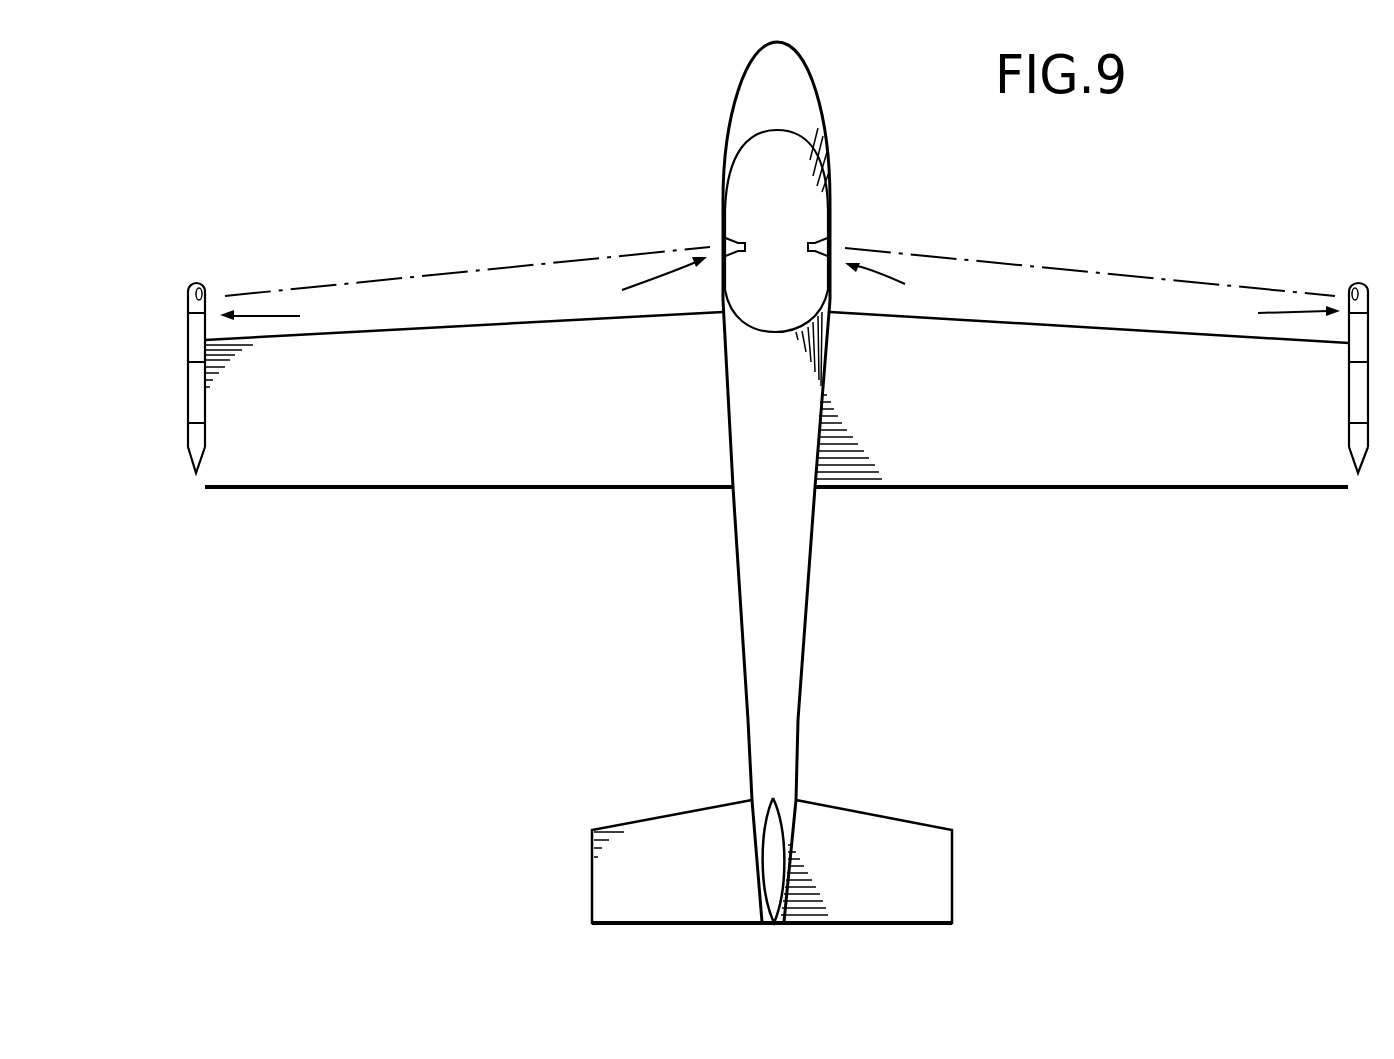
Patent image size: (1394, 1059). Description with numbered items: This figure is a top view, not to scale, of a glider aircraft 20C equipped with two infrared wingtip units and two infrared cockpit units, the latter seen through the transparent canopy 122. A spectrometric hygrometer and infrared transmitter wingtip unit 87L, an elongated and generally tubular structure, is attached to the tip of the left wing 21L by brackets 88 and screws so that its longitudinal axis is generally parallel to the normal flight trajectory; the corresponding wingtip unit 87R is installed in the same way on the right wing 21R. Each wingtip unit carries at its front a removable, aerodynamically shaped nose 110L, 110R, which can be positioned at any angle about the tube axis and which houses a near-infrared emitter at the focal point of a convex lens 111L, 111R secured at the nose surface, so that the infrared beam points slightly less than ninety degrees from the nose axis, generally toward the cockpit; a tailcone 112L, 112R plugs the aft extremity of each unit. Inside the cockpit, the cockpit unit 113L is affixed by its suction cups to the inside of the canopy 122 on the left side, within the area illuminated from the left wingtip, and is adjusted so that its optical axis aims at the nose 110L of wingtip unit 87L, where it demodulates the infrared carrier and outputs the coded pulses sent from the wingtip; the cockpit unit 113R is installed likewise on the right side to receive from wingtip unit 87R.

The aircraft 20C is at (716, 606).
The left wing 21L is at (340, 488).
The right wing 21R is at (1212, 488).
The nose 110L is at (192, 283).
The nose 110R is at (1360, 283).
The convex lens 111L is at (207, 293).
The convex lens 111R is at (1348, 292).
The tailcone 112L is at (188, 474).
The tailcone 112R is at (1362, 474).
The brackets 88 is at (207, 363).
The canopy 122 is at (722, 232).
The wingtip unit 87L is at (465, 289).
The wingtip unit 87R is at (1092, 289).
The cockpit unit 113L is at (614, 284).
The cockpit unit 113R is at (925, 287).